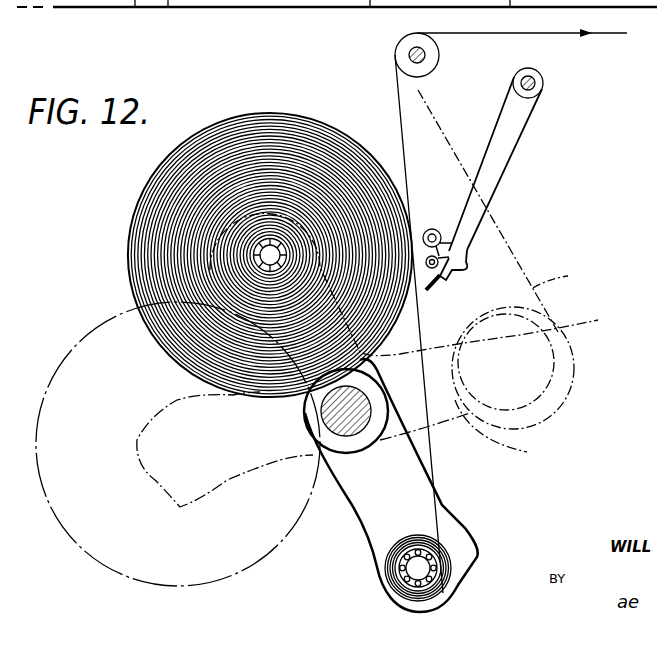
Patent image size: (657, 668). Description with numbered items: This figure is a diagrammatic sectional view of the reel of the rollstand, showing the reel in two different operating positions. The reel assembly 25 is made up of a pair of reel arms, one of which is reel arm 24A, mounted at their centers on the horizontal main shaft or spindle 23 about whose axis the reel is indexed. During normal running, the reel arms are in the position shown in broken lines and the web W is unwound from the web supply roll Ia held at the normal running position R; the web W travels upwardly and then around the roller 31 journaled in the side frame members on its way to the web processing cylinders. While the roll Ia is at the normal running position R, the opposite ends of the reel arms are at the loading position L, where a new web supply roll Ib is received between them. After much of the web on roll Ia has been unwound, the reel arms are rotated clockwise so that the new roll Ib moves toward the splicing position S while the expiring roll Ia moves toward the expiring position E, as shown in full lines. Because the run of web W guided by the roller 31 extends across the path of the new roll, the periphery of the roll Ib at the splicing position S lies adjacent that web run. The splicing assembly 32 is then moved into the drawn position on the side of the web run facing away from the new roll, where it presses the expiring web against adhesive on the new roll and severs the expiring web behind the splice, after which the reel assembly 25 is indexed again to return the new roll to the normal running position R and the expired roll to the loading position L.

The new web supply roll Ib is at (120, 608).
The web supply roll Ia is at (437, 590).
The roller 31 is at (414, 40).
The splicing assembly 32 is at (464, 262).
The main shaft or spindle 23 is at (362, 428).
The reel assembly 25 is at (362, 547).
The reel arm 24A is at (423, 512).
The expiring position E is at (480, 572).
The web W is at (560, 276).
The normal running position R is at (575, 393).
The loading position L is at (193, 598).
The splicing position S is at (376, 135).